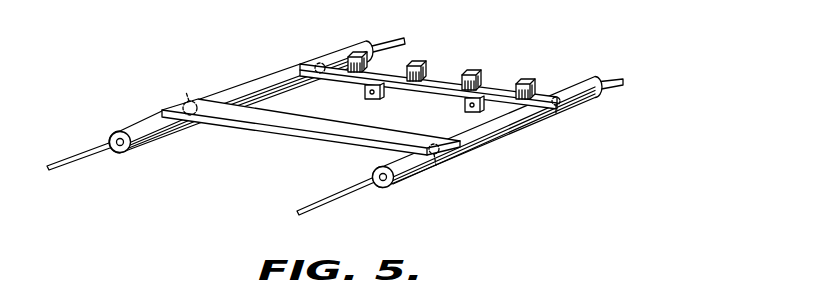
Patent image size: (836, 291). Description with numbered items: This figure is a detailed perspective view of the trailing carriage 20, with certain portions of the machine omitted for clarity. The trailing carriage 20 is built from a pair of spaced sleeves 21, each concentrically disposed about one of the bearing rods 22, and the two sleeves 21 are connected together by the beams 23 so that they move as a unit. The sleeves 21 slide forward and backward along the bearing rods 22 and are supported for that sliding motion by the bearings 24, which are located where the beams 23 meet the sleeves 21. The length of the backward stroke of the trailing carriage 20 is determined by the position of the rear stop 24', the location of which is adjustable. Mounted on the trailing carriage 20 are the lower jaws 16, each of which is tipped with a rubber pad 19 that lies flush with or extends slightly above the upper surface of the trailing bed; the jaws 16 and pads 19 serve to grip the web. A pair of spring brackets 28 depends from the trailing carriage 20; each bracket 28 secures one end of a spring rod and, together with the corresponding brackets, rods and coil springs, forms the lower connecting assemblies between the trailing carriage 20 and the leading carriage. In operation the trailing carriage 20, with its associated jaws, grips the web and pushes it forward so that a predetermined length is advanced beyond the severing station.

The lower jaw 16 is at (428, 66).
The rubber pad 19 is at (350, 56).
The trailing carriage 20 is at (335, 118).
The sleeve 21 is at (147, 148).
The bearing rod 22 is at (88, 147).
The beam 23 is at (182, 104).
The bearing 24 is at (321, 113).
The rear stop 24' is at (548, 124).
The spring bracket 28 is at (463, 104).